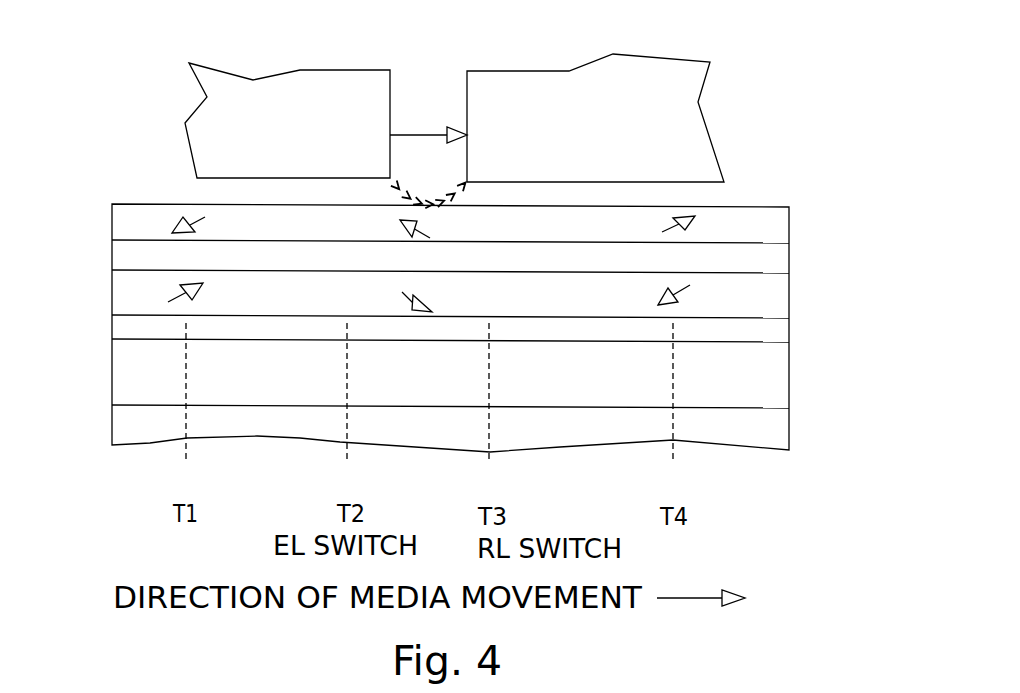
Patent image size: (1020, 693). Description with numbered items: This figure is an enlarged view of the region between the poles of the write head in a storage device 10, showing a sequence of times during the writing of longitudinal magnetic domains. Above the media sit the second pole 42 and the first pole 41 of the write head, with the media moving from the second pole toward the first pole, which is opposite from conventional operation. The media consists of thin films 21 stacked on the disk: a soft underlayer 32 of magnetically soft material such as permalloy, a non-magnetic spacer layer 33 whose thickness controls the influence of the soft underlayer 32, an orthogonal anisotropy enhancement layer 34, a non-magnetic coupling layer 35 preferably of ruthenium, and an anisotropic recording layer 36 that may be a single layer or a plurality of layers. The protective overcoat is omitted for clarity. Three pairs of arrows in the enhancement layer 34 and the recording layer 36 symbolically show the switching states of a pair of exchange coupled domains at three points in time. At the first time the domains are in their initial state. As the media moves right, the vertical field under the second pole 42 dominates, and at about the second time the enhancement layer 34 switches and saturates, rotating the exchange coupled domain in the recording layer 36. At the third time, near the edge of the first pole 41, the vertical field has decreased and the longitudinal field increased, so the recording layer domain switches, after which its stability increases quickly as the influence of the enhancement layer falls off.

The storage device 10 is at (756, 79).
The thin films 21 is at (77, 352).
The soft underlayer 32 is at (775, 386).
The non-magnetic spacer layer 33 is at (778, 331).
The orthogonal anisotropy enhancement layer 34 is at (777, 297).
The non-magnetic coupling layer 35 is at (777, 261).
The anisotropic recording layer 36 is at (780, 224).
The write head pole P1 41 is at (698, 158).
The write head pole P2 42 is at (200, 153).